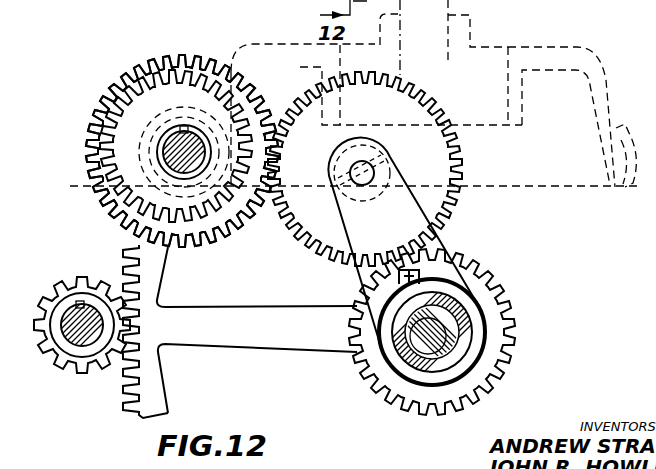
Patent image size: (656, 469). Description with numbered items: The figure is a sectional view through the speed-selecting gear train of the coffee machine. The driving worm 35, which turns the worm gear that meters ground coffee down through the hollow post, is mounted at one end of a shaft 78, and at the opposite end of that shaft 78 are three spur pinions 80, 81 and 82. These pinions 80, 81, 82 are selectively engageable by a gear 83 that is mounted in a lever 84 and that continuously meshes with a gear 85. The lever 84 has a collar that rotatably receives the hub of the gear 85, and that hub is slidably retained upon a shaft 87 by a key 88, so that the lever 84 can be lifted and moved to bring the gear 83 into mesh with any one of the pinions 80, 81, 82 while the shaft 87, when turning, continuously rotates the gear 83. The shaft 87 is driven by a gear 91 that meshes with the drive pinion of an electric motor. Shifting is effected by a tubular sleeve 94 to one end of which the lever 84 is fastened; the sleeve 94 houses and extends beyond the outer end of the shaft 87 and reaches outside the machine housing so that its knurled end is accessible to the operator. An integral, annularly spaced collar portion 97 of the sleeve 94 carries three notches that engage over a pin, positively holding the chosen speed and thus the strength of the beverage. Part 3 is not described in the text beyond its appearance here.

The housing 3 is at (603, 83).
The driving worm 35 is at (100, 184).
The shaft 78 is at (186, 126).
The spur pinion 80 is at (131, 76).
The spur pinion 81 is at (115, 90).
The spur pinion 82 is at (115, 133).
The gear 83 is at (437, 162).
The lever 84 is at (410, 213).
The gear 85 is at (483, 293).
The shaft 87 is at (472, 337).
The key 88 is at (402, 354).
The gear 91 is at (247, 333).
The tubular sleeve 94 is at (473, 327).
The collar portion 97 is at (73, 287).